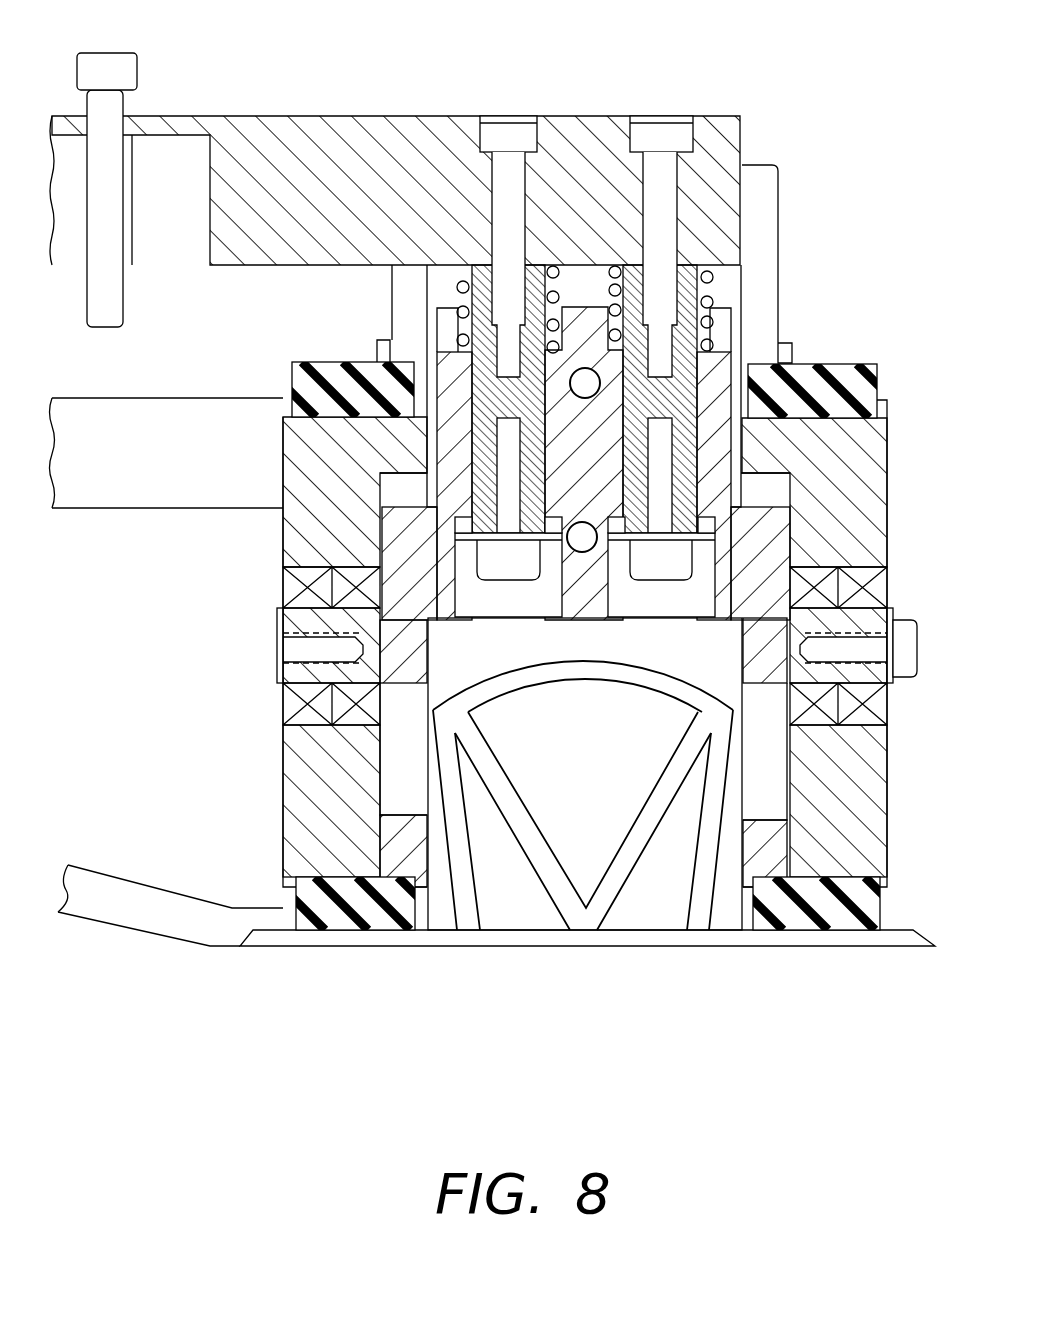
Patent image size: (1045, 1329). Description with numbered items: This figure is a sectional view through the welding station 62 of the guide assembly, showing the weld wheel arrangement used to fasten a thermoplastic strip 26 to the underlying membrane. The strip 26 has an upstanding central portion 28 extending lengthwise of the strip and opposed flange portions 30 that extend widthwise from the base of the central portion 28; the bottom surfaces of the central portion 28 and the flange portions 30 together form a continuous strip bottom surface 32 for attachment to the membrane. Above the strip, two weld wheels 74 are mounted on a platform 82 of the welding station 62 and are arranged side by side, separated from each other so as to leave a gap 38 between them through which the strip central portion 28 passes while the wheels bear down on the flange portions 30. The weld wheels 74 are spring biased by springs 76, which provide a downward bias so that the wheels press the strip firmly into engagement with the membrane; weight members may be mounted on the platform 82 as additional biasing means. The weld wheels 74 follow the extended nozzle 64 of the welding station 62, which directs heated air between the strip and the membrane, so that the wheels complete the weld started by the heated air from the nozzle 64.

The welding station 62 is at (552, 75).
The platform 82 is at (255, 116).
The springs 76 is at (457, 288).
The weld wheels 74 is at (283, 520).
The central portion 28 is at (630, 662).
The thermoplastic strip 26 is at (483, 940).
The gap 38 is at (740, 853).
The strip bottom surface 32 is at (853, 950).
The flange portions 30 is at (262, 945).
The extended nozzle 64 is at (143, 885).